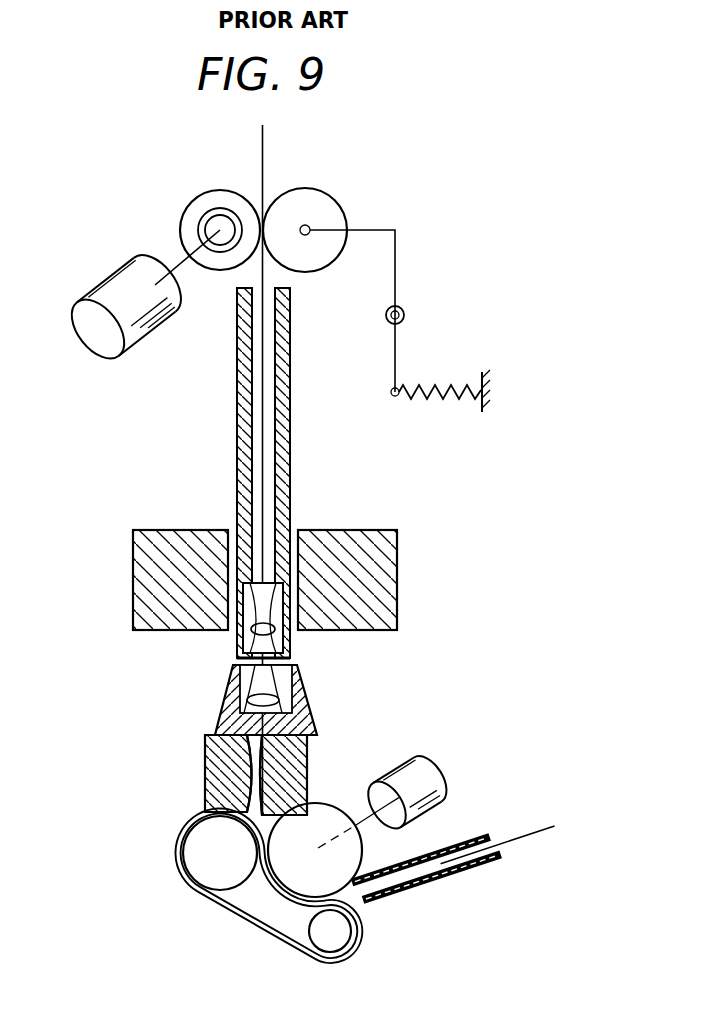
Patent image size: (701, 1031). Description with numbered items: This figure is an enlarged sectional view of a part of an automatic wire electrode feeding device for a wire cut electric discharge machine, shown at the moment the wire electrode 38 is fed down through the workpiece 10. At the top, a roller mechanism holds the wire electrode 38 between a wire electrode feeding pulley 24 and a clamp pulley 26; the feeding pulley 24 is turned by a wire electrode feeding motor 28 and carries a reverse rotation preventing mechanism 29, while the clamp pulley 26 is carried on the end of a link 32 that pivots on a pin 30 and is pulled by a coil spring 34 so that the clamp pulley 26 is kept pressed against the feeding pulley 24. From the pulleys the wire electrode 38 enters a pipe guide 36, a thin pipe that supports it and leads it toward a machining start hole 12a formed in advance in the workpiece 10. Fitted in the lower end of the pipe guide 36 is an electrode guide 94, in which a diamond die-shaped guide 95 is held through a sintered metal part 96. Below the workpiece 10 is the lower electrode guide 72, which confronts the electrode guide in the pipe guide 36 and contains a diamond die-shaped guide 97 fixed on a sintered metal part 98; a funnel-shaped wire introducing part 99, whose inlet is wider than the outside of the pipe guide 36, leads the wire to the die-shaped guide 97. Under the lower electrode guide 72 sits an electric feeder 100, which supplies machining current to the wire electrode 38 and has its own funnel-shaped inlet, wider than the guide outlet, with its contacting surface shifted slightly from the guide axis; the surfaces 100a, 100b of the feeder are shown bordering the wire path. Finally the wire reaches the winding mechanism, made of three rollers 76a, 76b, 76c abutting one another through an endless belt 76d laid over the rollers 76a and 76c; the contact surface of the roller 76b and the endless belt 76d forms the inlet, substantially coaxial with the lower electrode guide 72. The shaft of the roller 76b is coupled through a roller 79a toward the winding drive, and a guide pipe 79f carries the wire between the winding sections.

The workpiece 10 is at (385, 572).
The machining start hole 12a is at (294, 534).
The wire electrode feeding pulley 24 is at (190, 215).
The clamp pulley 26 is at (324, 197).
The wire electrode feeding motor 28 is at (116, 268).
The reverse rotation preventing mechanism 29 is at (221, 214).
The pin 30 is at (385, 316).
The link 32 is at (398, 228).
The coil spring 34 is at (447, 387).
The pipe guide 36 is at (288, 455).
The wire electrode 38 is at (253, 777).
The lower electrode guide 72 is at (308, 726).
The roller 76a is at (205, 855).
The roller 76b is at (365, 862).
The roller 76c is at (325, 937).
The endless belt 76d is at (243, 905).
The roller 79a is at (430, 773).
The guide pipe 79f is at (447, 878).
The electrode guide 94 is at (242, 636).
The die-shaped guide 95 is at (252, 633).
The nozzle wall 96 is at (290, 644).
The die-shaped guide 97 is at (242, 700).
The sintered metal part 98 is at (246, 690).
The wire introducing part 99 is at (285, 697).
The electric feeder 100 is at (215, 760).
The guide surface 100a is at (214, 776).
The guide surface 100b is at (306, 756).